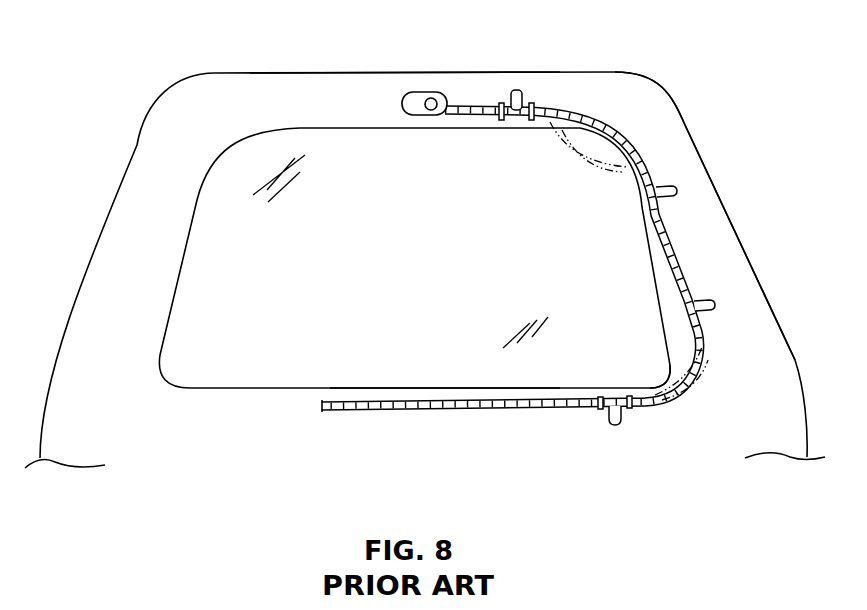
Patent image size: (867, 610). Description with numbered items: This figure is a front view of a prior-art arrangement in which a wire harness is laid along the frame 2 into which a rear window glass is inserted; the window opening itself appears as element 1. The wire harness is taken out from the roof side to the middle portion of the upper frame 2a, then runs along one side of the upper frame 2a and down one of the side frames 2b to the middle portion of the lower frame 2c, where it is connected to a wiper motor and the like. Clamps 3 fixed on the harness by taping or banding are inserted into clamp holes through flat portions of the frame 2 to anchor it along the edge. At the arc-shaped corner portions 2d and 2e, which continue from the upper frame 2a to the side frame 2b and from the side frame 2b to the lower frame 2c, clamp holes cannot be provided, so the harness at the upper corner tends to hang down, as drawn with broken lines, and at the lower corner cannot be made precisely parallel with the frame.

The window opening 1 is at (283, 258).
The frame 2 is at (212, 70).
The upper frame 2a is at (333, 112).
The side frame 2b is at (719, 240).
The lower frame 2c is at (378, 425).
The upper corner portion of body panel 2d is at (612, 124).
The lower corner portion of body panel 2e is at (705, 384).
The clamp 3 is at (523, 93).